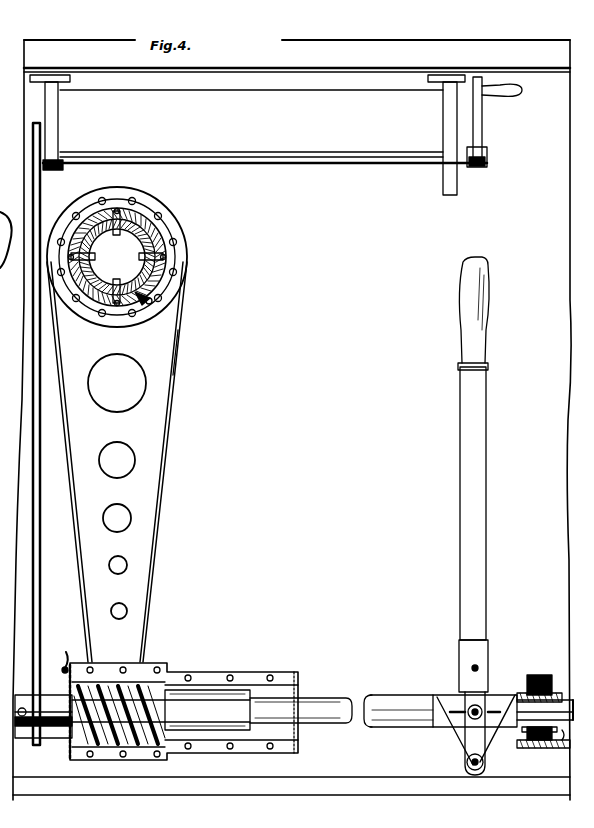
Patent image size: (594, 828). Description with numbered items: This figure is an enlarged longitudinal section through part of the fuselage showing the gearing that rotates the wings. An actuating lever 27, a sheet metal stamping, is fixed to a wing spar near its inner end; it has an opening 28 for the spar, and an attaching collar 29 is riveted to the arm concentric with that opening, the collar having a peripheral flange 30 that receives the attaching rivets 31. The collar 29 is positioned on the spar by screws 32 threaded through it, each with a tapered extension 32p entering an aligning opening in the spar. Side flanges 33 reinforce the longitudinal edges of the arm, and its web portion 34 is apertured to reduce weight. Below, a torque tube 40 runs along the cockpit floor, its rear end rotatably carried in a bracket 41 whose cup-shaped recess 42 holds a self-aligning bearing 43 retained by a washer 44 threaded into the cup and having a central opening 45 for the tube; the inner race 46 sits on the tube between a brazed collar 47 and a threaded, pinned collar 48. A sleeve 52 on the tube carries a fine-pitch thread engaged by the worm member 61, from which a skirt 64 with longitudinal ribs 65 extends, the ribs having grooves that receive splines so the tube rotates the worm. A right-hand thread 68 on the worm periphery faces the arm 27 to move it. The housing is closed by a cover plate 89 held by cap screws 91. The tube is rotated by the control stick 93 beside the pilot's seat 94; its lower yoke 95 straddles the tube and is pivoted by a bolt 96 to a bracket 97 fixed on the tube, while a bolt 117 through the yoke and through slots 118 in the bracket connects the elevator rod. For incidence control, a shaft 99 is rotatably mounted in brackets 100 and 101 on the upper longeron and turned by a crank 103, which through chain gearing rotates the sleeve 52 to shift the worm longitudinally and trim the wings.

The actuating lever 27 is at (178, 355).
The opening 28 is at (152, 228).
The attaching collar 29 is at (186, 254).
The peripheral flange 30 is at (128, 202).
The attaching rivet 31 is at (110, 198).
The screw 32 is at (143, 306).
The tapered extension 32p is at (138, 292).
The side flange 33 is at (176, 382).
The web portion 34 is at (130, 428).
The torque tube 40 is at (323, 700).
The bracket 41 is at (530, 740).
The cup-shaped recess 42 is at (540, 675).
The self-aligning bearing 43 is at (551, 684).
The washer 44 is at (524, 680).
The central opening 45 is at (520, 693).
The inner race 46 is at (524, 730).
The collar 47 is at (504, 728).
The collar 48 is at (566, 742).
The sleeve 52 is at (50, 730).
The worm member 61 is at (138, 760).
The skirt 64 is at (6, 232).
The longitudinal rib 65 is at (236, 676).
The right-hand thread 68 is at (96, 748).
The cover plate 89 is at (68, 652).
The cap screw 91 is at (70, 748).
The control stick 93 is at (476, 511).
The pilot's seat 94 is at (34, 140).
The yoke 95 is at (470, 680).
The bolt 96 is at (467, 765).
The bracket 97 is at (462, 740).
The shaft 99 is at (252, 166).
The bracket 100 is at (58, 127).
The bracket 101 is at (440, 120).
The crank 103 is at (483, 128).
The bolt 117 is at (468, 716).
The slot 118 is at (466, 706).